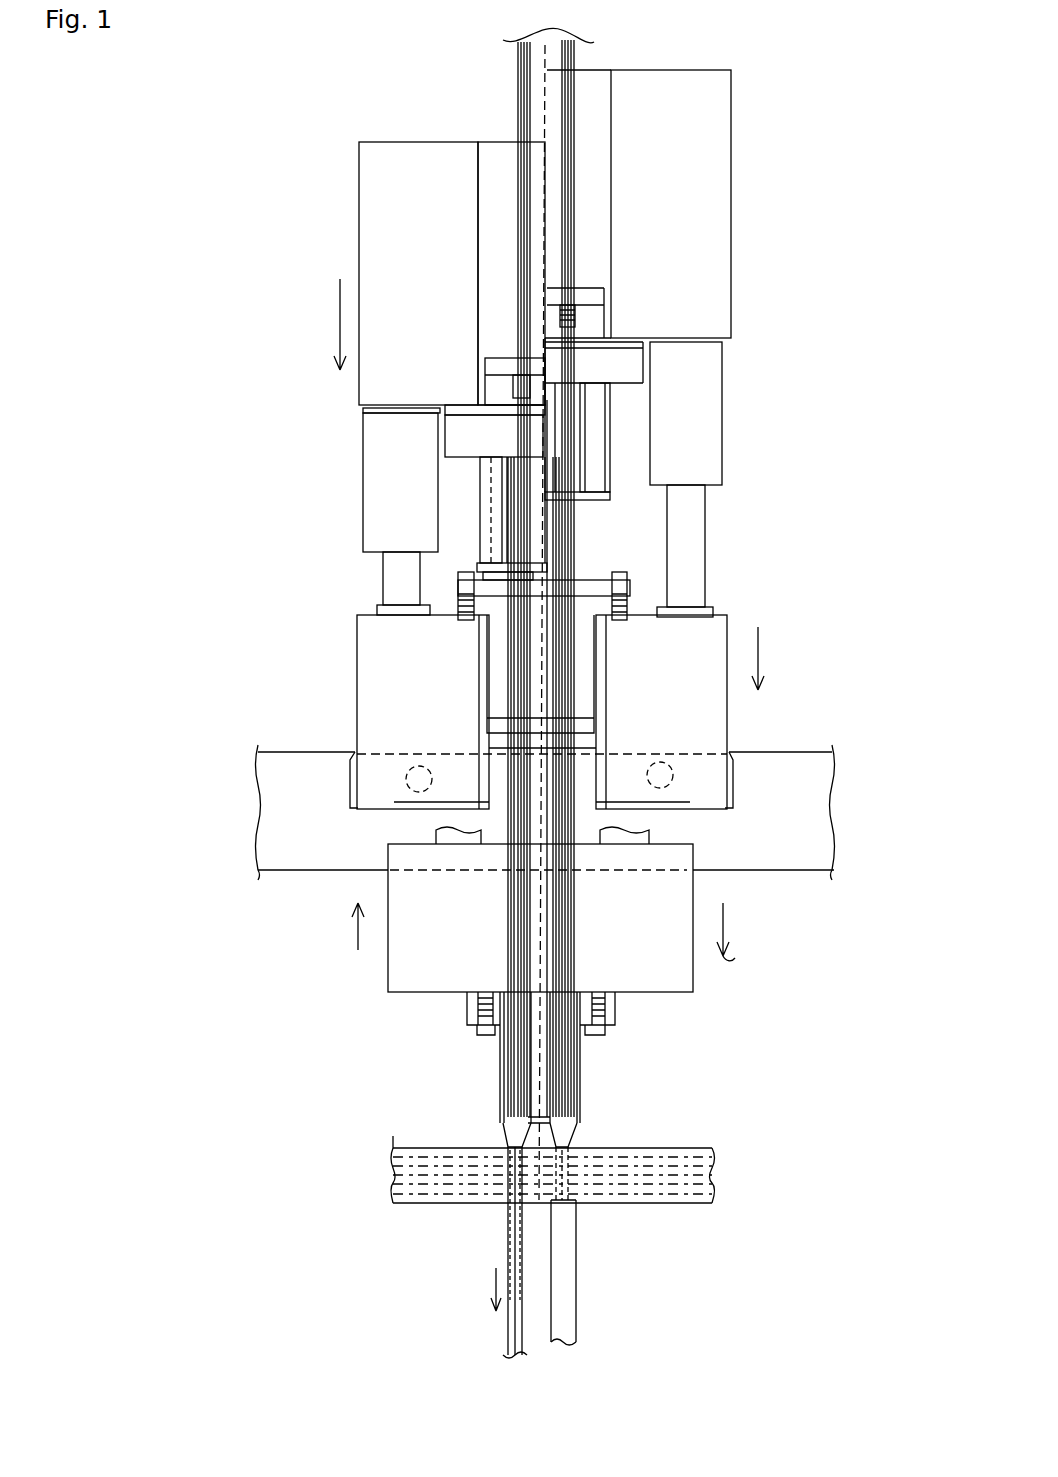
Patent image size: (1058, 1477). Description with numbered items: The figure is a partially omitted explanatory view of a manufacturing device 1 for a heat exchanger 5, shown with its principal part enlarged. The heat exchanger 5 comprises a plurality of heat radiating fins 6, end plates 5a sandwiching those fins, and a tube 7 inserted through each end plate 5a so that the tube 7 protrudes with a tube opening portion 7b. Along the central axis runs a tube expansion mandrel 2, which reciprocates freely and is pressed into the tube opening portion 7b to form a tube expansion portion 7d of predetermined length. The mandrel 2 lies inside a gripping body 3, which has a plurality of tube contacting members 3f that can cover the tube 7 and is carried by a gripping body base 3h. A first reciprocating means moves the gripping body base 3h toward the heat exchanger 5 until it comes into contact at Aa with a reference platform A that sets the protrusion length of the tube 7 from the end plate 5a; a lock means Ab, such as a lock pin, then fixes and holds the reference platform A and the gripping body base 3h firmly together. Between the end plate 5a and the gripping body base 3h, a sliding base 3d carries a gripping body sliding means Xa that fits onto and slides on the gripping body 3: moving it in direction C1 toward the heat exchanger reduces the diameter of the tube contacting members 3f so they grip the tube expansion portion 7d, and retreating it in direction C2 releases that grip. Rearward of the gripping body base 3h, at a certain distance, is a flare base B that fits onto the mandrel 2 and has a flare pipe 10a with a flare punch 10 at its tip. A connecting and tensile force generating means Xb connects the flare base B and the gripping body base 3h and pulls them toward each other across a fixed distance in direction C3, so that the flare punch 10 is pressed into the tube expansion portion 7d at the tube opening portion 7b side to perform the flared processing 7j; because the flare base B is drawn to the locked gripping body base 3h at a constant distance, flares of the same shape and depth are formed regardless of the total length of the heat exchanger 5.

The manufacturing device 1 is at (746, 180).
The tube expansion mandrel 2 is at (518, 118).
The flare base B is at (359, 228).
The pulling direction C3 is at (338, 315).
The connecting and tensile force generating means Xb is at (363, 494).
The flare pipe 10a is at (576, 541).
The gripping body base 3h is at (630, 593).
The gripping body 3 is at (508, 682).
The lock means Ab is at (418, 764).
The reference platform A is at (794, 867).
The contact surface of reference platform Aa is at (373, 811).
The forward movement direction C1 is at (749, 943).
The retreat direction C2 is at (333, 936).
The sliding base 3d is at (388, 968).
The gripping body sliding means Xa is at (500, 1045).
The flare punch 10 is at (502, 1128).
The flared processing 7j is at (502, 1134).
The tube opening portion 7b is at (580, 1113).
The tube contacting members 3f is at (580, 1138).
The heat exchanger 5 is at (685, 1206).
The end plate 5a is at (689, 1148).
The heat radiating fins 6 is at (424, 1204).
The tube 7 is at (572, 1292).
The tube expansion portion 7d is at (508, 1163).